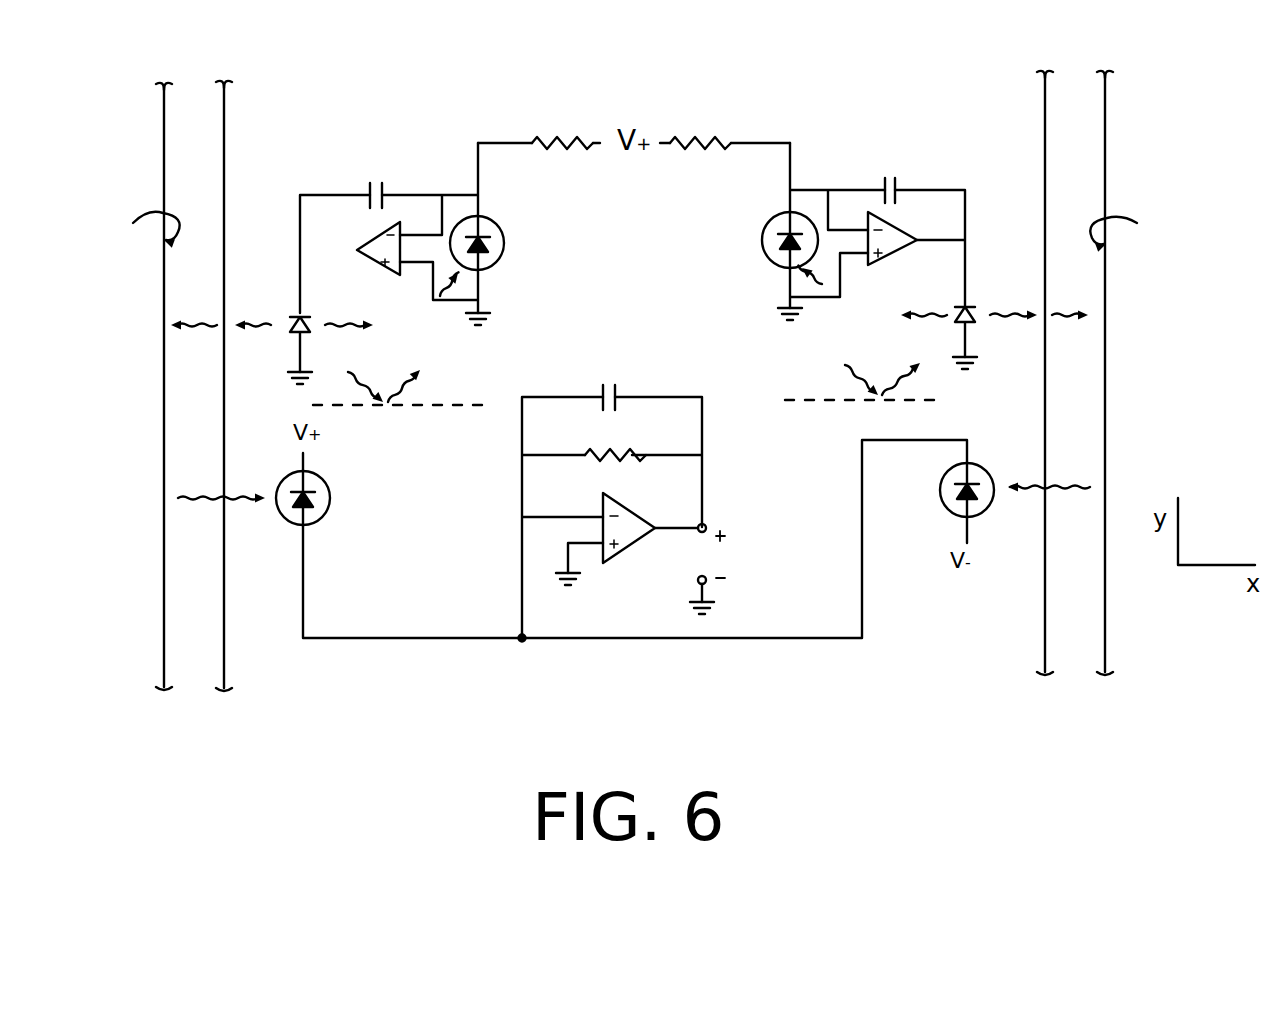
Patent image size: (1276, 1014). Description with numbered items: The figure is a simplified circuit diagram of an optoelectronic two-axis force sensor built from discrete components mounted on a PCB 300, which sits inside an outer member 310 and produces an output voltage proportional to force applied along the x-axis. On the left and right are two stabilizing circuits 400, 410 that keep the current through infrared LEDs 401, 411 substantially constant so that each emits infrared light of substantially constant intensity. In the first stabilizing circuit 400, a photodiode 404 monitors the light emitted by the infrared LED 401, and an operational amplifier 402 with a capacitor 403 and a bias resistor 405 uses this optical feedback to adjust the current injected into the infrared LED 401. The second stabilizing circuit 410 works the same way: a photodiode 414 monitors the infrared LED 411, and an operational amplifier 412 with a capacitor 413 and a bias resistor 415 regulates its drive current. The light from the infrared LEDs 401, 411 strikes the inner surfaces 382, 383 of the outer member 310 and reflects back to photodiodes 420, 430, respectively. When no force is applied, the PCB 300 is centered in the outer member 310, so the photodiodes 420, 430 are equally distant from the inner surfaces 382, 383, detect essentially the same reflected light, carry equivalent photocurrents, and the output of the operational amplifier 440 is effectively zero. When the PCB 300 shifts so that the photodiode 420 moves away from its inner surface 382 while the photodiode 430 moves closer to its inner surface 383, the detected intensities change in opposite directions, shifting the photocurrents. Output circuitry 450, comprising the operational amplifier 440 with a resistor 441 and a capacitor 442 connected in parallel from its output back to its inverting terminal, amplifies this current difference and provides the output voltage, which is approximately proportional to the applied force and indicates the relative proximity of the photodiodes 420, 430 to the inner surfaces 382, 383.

The PCB 300 is at (617, 714).
The outer member 310 is at (641, 381).
The inner surface 382 is at (126, 228).
The inner surface 383 is at (1139, 231).
The stabilizing circuit 400 is at (444, 242).
The infrared LED 401 is at (327, 330).
The operational amplifier 402 is at (361, 243).
The capacitor 403 is at (390, 178).
The photodiode 404 is at (505, 270).
The bias resistor 405 is at (539, 125).
The stabilizing circuit 410 is at (818, 235).
The infrared LED 411 is at (948, 316).
The operational amplifier 412 is at (913, 235).
The capacitor 413 is at (891, 173).
The photodiode 414 is at (769, 266).
The bias resistor 415 is at (725, 125).
The photodiode 420 is at (287, 489).
The photodiode 430 is at (986, 503).
The operational amplifier 440 is at (614, 494).
The resistor 441 is at (628, 437).
The capacitor 442 is at (613, 380).
The output circuitry 450 is at (746, 559).